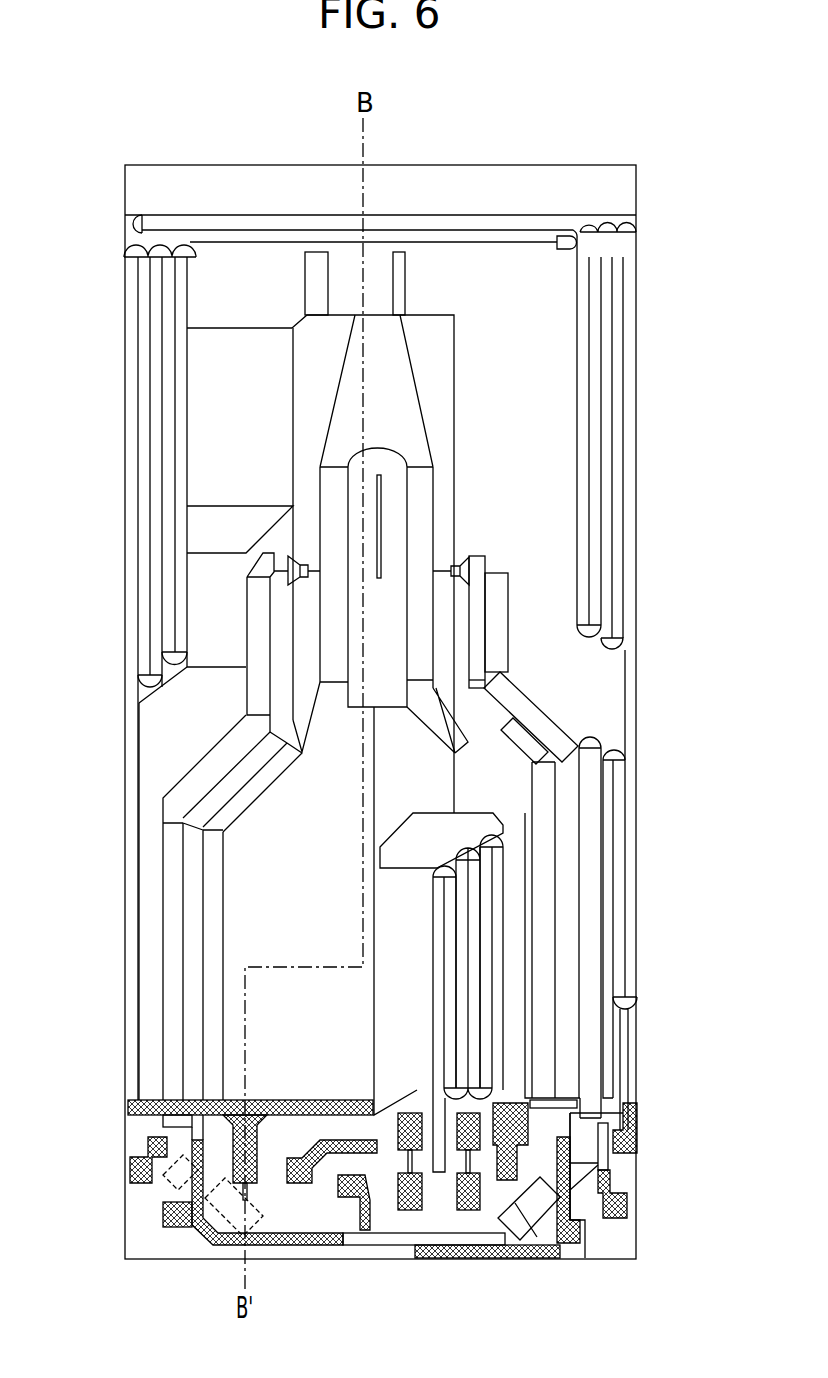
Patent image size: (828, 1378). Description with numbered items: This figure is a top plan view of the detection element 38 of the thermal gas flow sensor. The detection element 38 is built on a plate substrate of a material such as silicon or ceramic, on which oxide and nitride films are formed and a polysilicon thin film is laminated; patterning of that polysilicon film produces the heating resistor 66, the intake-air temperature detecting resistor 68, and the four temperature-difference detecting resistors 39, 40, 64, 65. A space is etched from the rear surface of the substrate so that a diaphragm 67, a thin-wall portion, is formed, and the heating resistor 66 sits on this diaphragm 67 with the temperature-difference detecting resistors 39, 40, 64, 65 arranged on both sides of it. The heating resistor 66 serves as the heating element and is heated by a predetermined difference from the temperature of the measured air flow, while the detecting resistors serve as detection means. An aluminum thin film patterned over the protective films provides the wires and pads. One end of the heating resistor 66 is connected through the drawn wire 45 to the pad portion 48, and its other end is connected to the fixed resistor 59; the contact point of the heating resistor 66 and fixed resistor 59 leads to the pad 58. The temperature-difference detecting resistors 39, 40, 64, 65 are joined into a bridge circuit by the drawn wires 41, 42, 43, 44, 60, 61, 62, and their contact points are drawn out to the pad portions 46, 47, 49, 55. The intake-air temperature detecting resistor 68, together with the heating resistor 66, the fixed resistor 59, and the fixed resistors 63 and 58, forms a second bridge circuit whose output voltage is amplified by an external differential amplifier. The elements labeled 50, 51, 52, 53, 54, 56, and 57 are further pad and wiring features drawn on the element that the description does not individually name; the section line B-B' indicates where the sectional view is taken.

The detection element 38 is at (135, 197).
The temperature-difference detecting resistor 39 is at (348, 497).
The temperature-difference detecting resistor 40 is at (320, 632).
The drawn wire 41 is at (153, 885).
The drawn wire 42 is at (175, 948).
The drawn wire 43 is at (193, 1012).
The drawn wire 44 is at (212, 1058).
The drawn wire 45 is at (313, 880).
The pad portion 46 is at (130, 1165).
The pad portion 47 is at (165, 1222).
The pad portion 48 is at (220, 1237).
The pad portion 49 is at (342, 1200).
The lead 50 is at (385, 1192).
The terminal pair 51 is at (410, 1210).
The terminal pair 52 is at (465, 1210).
The terminal 53 is at (502, 1180).
The terminal 54 is at (530, 1237).
The pad portion 55 is at (578, 1245).
The terminal 56 is at (627, 1203).
The terminal 57 is at (617, 1140).
The pad 58 is at (477, 1030).
The fixed resistor 59 is at (513, 978).
The drawn wire 60 is at (545, 928).
The drawn wire 61 is at (568, 888).
The drawn wire 62 is at (590, 845).
The fixed resistor 63 is at (618, 790).
The temperature-difference detecting resistor 64 is at (433, 613).
The temperature-difference detecting resistor 65 is at (433, 525).
The heating resistor 66 is at (407, 497).
The diaphragm 67 is at (455, 397).
The intake-air temperature detecting resistor 68 is at (620, 288).